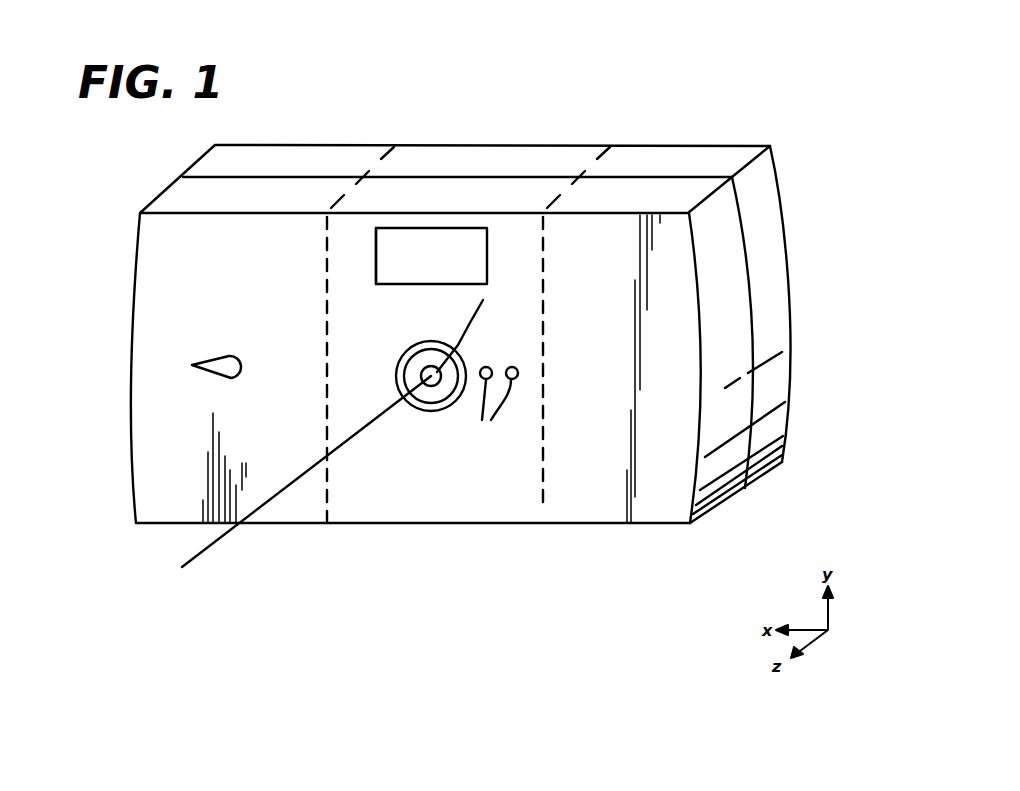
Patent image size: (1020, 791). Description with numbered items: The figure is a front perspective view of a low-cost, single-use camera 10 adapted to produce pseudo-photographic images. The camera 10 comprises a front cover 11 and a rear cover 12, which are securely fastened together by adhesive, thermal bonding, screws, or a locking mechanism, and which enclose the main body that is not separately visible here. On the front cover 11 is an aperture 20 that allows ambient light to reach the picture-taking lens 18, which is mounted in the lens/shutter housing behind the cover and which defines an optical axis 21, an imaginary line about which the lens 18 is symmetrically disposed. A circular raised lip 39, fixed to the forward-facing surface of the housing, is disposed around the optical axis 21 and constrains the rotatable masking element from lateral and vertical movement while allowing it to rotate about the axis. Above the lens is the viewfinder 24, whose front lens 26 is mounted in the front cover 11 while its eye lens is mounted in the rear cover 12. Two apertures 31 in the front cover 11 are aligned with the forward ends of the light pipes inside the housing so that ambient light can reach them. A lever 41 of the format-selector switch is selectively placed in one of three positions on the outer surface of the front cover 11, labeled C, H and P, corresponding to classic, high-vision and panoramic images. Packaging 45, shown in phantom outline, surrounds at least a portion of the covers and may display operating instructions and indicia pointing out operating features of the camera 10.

The camera 10 is at (790, 147).
The front cover 11 is at (138, 465).
The rear cover 12 is at (783, 330).
The picture-taking lens 18 is at (478, 334).
The aperture 20 is at (427, 413).
The optical axis 21 is at (213, 543).
The viewfinder 24 is at (498, 250).
The front lens 26 is at (387, 252).
The apertures 31 is at (489, 414).
The circular raised lip 39 is at (407, 357).
The lever 41 is at (226, 357).
The packaging 45 is at (542, 508).